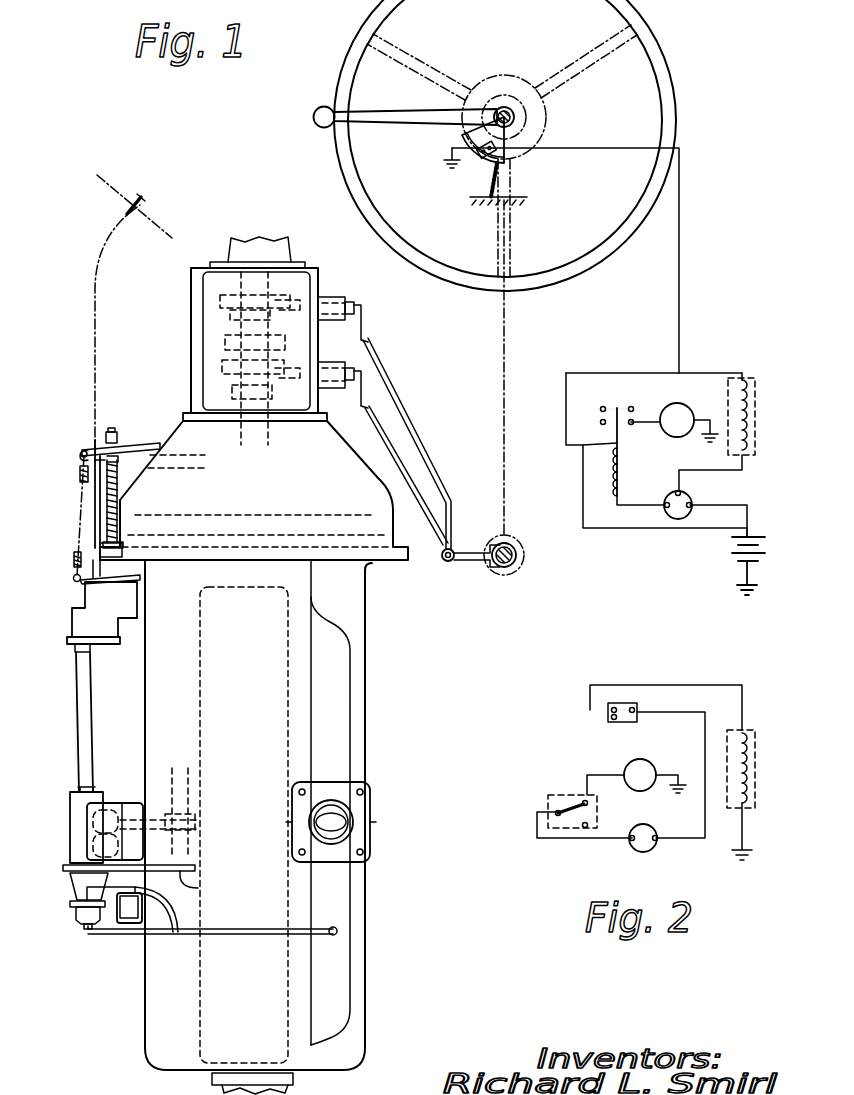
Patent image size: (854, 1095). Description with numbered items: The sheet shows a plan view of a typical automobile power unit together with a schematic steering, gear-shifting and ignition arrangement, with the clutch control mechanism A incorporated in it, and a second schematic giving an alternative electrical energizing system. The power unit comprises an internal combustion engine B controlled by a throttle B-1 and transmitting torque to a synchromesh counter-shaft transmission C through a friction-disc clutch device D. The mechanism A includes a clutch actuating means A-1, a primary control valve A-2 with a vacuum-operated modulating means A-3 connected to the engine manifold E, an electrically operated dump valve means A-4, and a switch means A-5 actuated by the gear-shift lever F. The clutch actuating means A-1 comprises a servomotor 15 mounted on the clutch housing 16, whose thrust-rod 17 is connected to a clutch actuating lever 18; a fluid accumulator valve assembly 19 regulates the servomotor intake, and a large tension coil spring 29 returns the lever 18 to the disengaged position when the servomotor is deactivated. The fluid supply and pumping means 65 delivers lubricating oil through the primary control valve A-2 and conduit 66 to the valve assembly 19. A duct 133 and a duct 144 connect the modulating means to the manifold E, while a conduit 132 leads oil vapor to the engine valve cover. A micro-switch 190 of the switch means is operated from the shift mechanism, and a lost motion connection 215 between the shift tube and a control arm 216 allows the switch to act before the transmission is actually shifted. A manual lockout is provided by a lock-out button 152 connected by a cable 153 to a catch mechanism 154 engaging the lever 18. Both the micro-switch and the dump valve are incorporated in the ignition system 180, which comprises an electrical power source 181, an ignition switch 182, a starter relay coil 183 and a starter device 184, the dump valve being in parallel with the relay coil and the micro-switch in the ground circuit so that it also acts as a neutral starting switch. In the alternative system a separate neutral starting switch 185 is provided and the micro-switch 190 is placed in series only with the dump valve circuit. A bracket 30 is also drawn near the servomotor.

In FIG. 1, the gear-shift lever F is at (398, 108).
In FIG. 1, the switch means A-5 is at (518, 157).
In FIG. 1, the micro-switch 190 is at (480, 163).
In FIG. 2, the micro-switch 190 is at (605, 716).
In FIG. 1, the synchromesh counter-shaft transmission C is at (188, 336).
In FIG. 1, the control arm 216 is at (462, 563).
In FIG. 1, the lost motion connection 215 is at (485, 530).
In FIG. 1, the friction-disc type clutch device D is at (296, 494).
In FIG. 1, the clutch housing 16 is at (178, 425).
In FIG. 1, the internal combustion engine B is at (372, 686).
In FIG. 1, the engine manifold E is at (355, 959).
In FIG. 1, the throttle B-1 is at (358, 805).
In FIG. 1, the cable 153 is at (95, 283).
In FIG. 1, the lock-out button 152 is at (143, 200).
In FIG. 1, the catch mechanism 154 is at (85, 447).
In FIG. 1, the clutch actuating lever 18 is at (136, 447).
In FIG. 1, the thrust-rod 17 is at (117, 490).
In FIG. 1, the tension coil spring 29 is at (79, 480).
In FIG. 1, the servomotor 15 is at (80, 592).
In FIG. 1, the bracket 30 is at (130, 596).
In FIG. 1, the fluid accumulator valve assembly 19 is at (68, 623).
In FIG. 1, the clutch actuating means A-1 is at (128, 630).
In FIG. 1, the conduit 66 is at (78, 672).
In FIG. 1, the clutch control mechanism A is at (68, 740).
In FIG. 1, the primary control valve A-2 is at (66, 840).
In FIG. 1, the fluid supply and pumping means 65 is at (113, 805).
In FIG. 1, the duct 133 is at (75, 890).
In FIG. 1, the conduit 132 is at (200, 889).
In FIG. 1, the electrically operated dump valve means A-4 is at (112, 918).
In FIG. 2, the electrically operated dump valve means A-4 is at (762, 742).
In FIG. 1, the duct 144 is at (90, 934).
In FIG. 1, the vacuum-operated modulating means A-3 is at (72, 925).
In FIG. 1, the ignition system 180 is at (622, 368).
In FIG. 1, the starter device 184 is at (673, 438).
In FIG. 2, the starter device 184 is at (633, 785).
In FIG. 1, the starter relay coil 183 is at (622, 464).
In FIG. 1, the ignition switch 182 is at (690, 496).
In FIG. 2, the ignition switch 182 is at (648, 828).
In FIG. 1, the electrical power source 181 is at (770, 545).
In FIG. 2, the neutral starting switch 185 is at (568, 830).